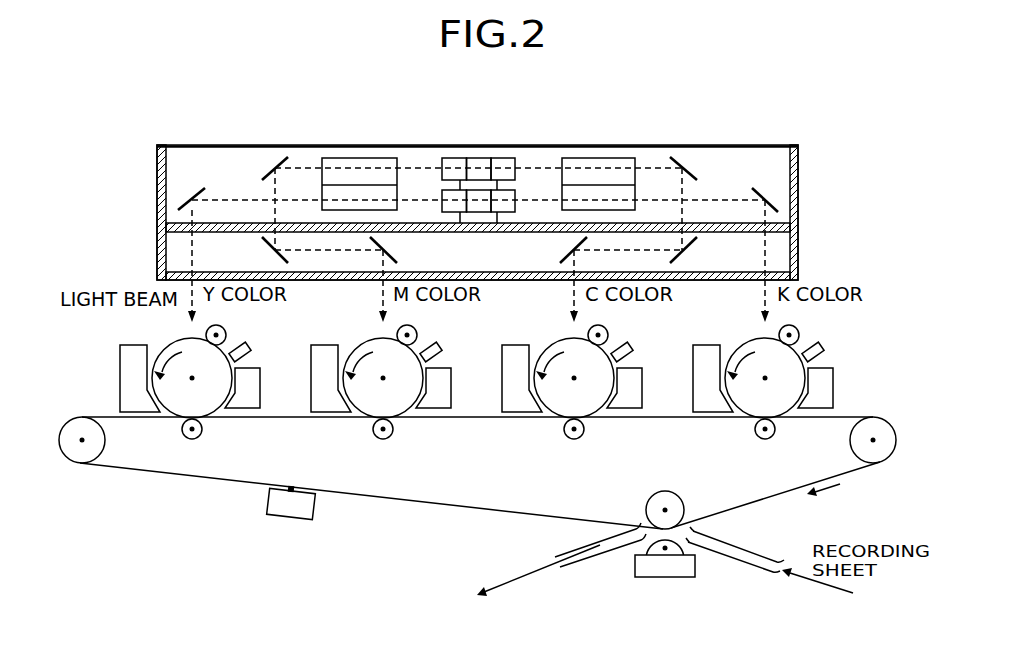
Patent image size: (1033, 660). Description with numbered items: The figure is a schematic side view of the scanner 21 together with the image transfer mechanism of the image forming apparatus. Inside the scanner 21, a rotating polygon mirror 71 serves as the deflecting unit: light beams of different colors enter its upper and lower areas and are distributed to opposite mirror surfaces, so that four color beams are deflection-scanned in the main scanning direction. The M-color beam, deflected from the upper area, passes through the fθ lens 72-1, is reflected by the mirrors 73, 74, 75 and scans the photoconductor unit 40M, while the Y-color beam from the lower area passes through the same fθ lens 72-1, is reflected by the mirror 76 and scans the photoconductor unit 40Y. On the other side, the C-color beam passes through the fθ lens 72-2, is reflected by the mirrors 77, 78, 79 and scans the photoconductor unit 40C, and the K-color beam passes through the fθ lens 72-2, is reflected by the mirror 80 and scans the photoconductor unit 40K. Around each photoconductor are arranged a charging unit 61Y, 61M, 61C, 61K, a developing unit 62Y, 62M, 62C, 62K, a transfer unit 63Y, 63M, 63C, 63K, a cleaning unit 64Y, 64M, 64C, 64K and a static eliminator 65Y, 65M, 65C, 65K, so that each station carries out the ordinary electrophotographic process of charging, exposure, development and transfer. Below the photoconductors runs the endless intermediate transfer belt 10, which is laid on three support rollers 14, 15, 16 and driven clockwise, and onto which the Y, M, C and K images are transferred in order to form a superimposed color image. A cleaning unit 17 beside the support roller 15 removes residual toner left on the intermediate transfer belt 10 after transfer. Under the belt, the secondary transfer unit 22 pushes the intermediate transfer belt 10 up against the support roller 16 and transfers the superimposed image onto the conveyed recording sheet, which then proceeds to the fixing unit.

The scanner 21 is at (733, 145).
The polygon mirror 71 is at (478, 158).
The fθ lens 72-1 is at (356, 158).
The fθ lens 72-2 is at (597, 158).
The mirror 73 is at (272, 168).
The mirror 74 is at (272, 256).
The mirror 75 is at (390, 245).
The mirror 76 is at (192, 200).
The mirror 77 is at (688, 163).
The mirror 78 is at (690, 258).
The mirror 79 is at (566, 247).
The mirror 80 is at (763, 198).
The photoconductor unit 40Y is at (212, 405).
The photoconductor unit 40M is at (403, 405).
The photoconductor unit 40C is at (594, 405).
The photoconductor unit 40K is at (785, 405).
The charging unit 61Y is at (228, 328).
The charging unit 61M is at (419, 328).
The charging unit 61C is at (610, 328).
The charging unit 61K is at (802, 328).
The developing unit 62Y is at (120, 376).
The developing unit 62M is at (332, 405).
The developing unit 62C is at (523, 405).
The developing unit 62K is at (715, 405).
The transfer unit 63Y is at (182, 433).
The transfer unit 63M is at (380, 440).
The transfer unit 63C is at (571, 440).
The transfer unit 63K is at (762, 440).
The cleaning unit 64Y is at (245, 398).
The cleaning unit 64M is at (436, 398).
The cleaning unit 64C is at (627, 398).
The cleaning unit 64K is at (834, 381).
The static eliminator 65Y is at (250, 348).
The static eliminator 65M is at (441, 348).
The static eliminator 65C is at (632, 348).
The static eliminator 65K is at (823, 348).
The intermediate transfer belt 10 is at (405, 502).
The support roller 14 is at (889, 458).
The support roller 15 is at (70, 461).
The support roller 16 is at (680, 496).
The cleaning unit 17 is at (290, 507).
The secondary transfer unit 22 is at (666, 578).